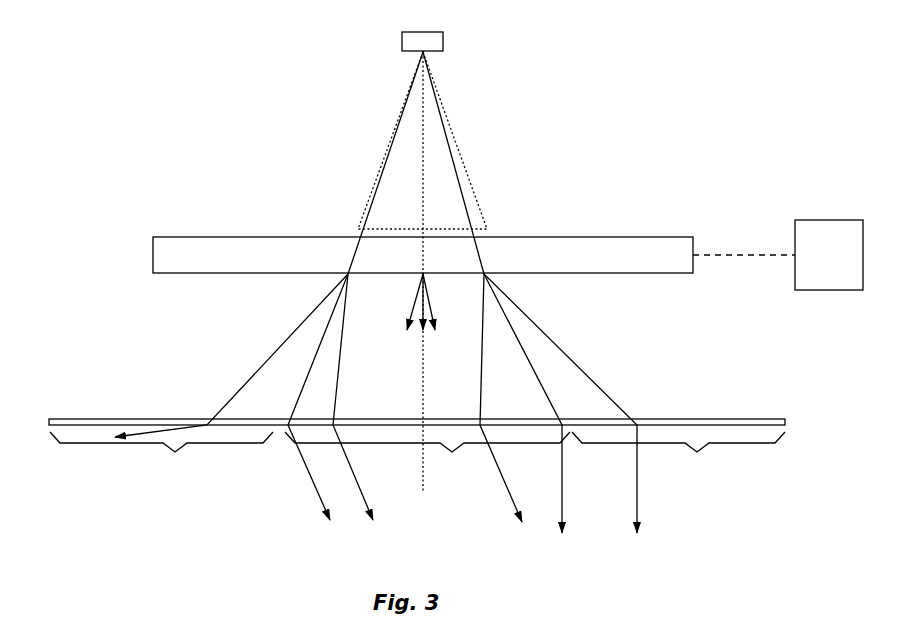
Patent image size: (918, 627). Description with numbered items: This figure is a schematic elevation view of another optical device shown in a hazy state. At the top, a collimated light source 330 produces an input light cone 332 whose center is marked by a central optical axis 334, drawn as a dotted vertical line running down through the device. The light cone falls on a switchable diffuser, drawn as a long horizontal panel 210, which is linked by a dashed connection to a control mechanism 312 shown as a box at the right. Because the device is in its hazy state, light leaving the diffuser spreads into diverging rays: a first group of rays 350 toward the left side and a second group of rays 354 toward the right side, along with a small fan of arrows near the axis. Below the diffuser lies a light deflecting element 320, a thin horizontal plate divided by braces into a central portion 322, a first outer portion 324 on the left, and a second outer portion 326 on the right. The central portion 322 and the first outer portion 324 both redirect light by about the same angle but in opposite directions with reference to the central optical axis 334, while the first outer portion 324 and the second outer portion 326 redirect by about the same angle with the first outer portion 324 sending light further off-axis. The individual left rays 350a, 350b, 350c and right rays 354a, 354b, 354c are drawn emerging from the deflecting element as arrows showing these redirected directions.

The collimated light source 330 is at (444, 41).
The input light cone 332 is at (455, 135).
The central optical axis 334 is at (422, 166).
The first light beam 350 is at (357, 229).
The second light beam 354 is at (489, 229).
The light directing element 210 is at (598, 236).
The control mechanism 312 is at (778, 255).
The light deflecting element 320 is at (72, 417).
The central portion 322 is at (427, 456).
The first outer portion 324 is at (161, 455).
The second outer portion 326 is at (678, 456).
The first beam portion a 350a is at (140, 433).
The first beam portion b 350b is at (314, 488).
The first beam portion c 350c is at (361, 495).
The second beam portion a 354a is at (512, 500).
The second beam portion b 354b is at (563, 505).
The second beam portion c 354c is at (638, 505).